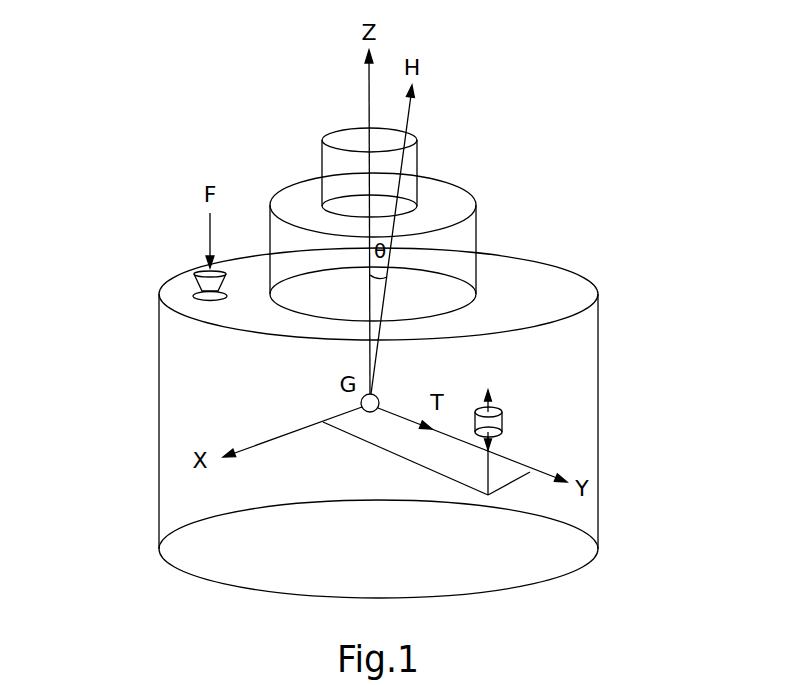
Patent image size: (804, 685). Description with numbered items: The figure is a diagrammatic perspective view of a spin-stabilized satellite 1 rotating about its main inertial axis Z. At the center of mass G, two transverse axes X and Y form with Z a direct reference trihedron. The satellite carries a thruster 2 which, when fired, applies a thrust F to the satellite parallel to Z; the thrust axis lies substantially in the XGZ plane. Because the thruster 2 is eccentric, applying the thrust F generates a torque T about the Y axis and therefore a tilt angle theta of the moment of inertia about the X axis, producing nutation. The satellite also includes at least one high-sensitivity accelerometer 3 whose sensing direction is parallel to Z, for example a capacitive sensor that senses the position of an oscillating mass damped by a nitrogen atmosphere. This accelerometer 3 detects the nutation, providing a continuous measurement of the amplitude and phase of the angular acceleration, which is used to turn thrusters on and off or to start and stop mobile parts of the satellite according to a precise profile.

The spin-stabilized satellite 1 is at (424, 373).
The thruster 2 is at (178, 284).
The high-sensitivity accelerometer 3 is at (501, 412).